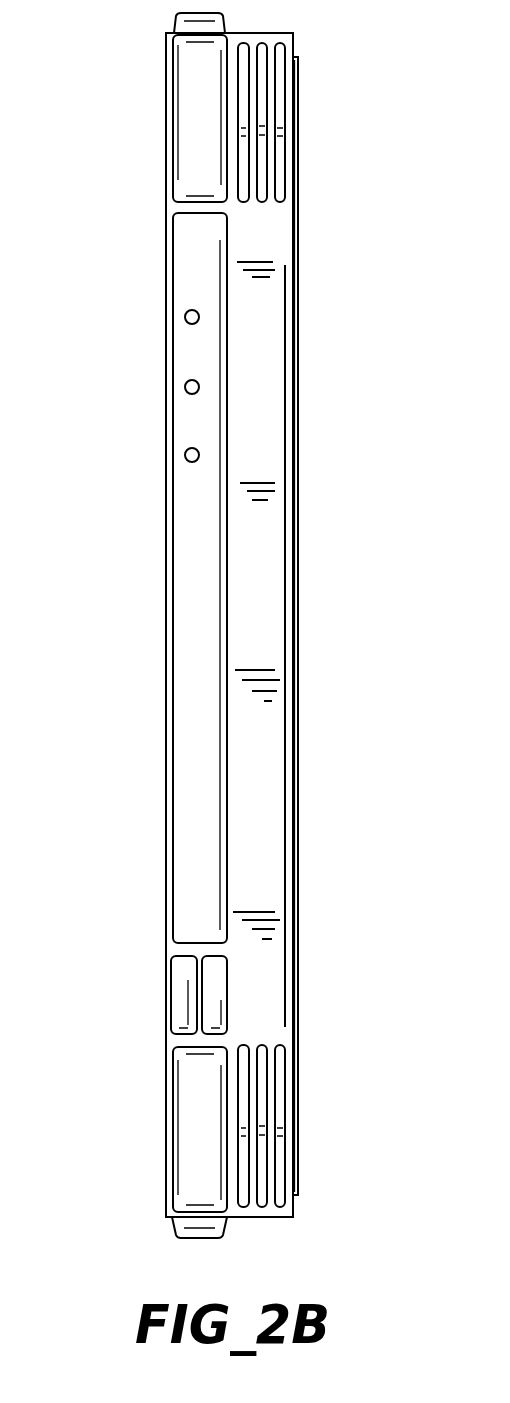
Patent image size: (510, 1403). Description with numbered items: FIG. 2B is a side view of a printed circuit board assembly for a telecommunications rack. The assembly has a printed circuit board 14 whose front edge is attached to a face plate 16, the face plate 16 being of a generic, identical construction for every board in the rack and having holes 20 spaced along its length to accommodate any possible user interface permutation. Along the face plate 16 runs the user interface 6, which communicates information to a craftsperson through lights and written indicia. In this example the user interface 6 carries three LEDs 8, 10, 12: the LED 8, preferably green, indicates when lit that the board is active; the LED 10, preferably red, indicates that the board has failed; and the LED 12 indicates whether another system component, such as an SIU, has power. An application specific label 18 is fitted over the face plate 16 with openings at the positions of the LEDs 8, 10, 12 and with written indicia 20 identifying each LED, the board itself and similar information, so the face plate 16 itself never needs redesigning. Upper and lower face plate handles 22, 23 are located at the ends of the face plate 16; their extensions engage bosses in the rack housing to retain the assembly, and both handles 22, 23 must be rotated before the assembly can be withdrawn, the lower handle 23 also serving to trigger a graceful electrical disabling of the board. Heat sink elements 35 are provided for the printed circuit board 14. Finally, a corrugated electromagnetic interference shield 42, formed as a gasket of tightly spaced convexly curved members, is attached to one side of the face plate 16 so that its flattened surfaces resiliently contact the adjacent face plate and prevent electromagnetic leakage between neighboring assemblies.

The user interface 6 is at (212, 528).
The LED 8 is at (198, 382).
The LED 10 is at (185, 317).
The LED 12 is at (185, 456).
The printed circuit board 14 is at (162, 627).
The face plate 16 is at (267, 800).
The application specific label 18 is at (166, 785).
The holes / written indicia 20 is at (203, 480).
The upper face plate handle 22 is at (195, 122).
The lower face plate handle 23 is at (202, 1135).
The heat sink elements 35 is at (282, 132).
The electromagnetic interference shield 42 is at (298, 950).